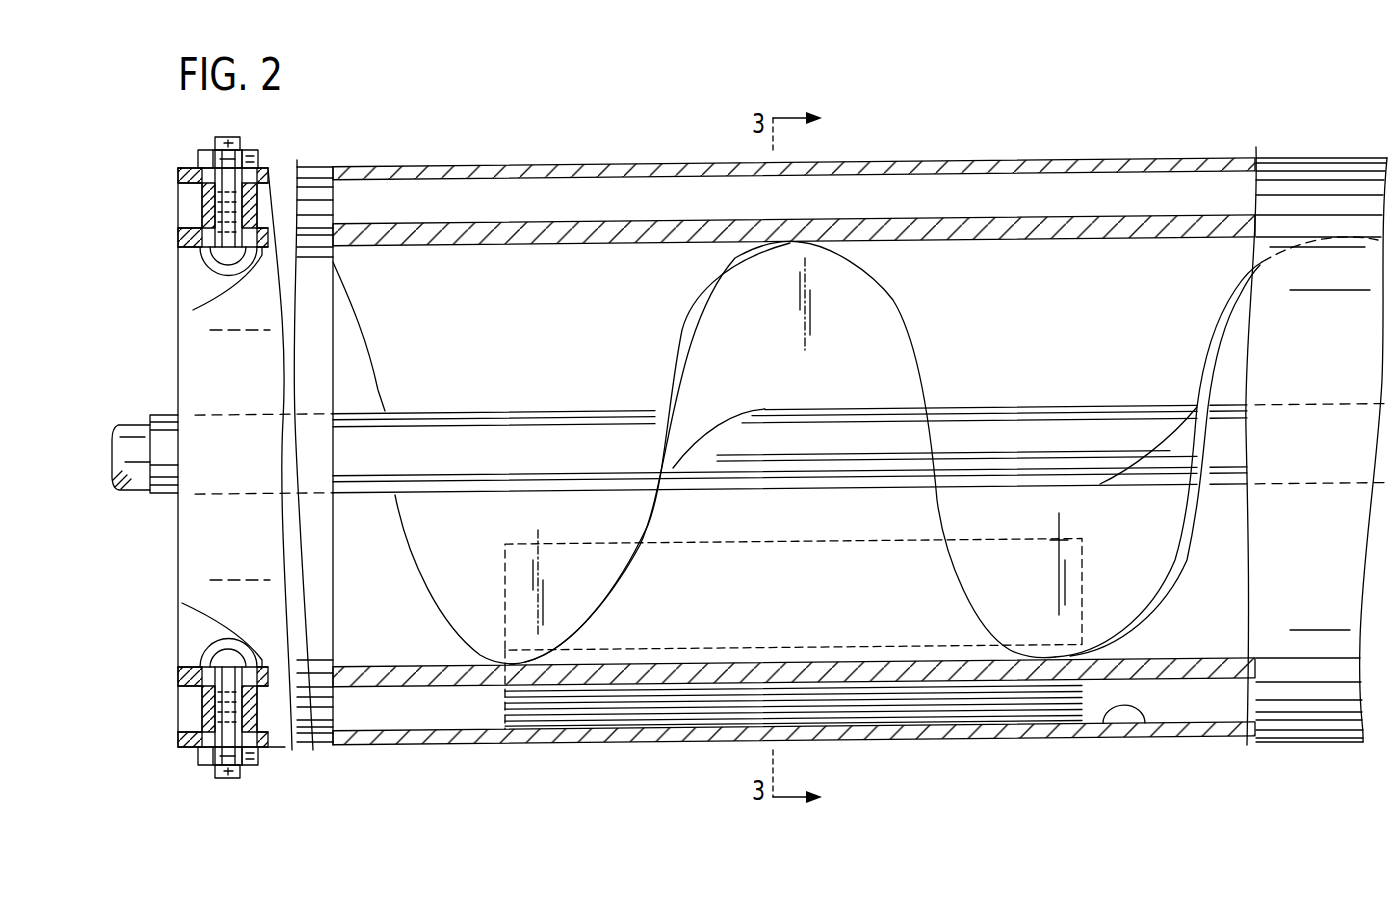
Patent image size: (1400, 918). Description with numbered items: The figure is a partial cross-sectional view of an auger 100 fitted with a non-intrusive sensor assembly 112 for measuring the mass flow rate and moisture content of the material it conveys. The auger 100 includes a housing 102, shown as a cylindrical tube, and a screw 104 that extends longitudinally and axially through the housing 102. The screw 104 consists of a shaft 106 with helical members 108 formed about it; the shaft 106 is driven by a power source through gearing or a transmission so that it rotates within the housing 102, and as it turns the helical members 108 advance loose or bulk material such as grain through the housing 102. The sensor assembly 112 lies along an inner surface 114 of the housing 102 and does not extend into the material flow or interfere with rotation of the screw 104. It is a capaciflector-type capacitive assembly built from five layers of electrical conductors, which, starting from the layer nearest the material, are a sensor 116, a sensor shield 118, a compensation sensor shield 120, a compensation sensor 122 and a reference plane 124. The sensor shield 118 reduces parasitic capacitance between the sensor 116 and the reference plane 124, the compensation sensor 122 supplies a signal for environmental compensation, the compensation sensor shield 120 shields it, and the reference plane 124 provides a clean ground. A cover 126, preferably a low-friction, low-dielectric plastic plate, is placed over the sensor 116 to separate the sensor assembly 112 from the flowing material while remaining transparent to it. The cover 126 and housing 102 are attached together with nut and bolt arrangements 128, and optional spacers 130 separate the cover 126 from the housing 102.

The auger 100 is at (1108, 104).
The housing 102 is at (1177, 738).
The screw 104 is at (938, 381).
The shaft 106 is at (1040, 405).
The helical members 108 is at (364, 351).
The sensor assembly 112 is at (714, 772).
The inner surface 114 is at (1145, 742).
The sensor 116 is at (540, 693).
The sensor shield 118 is at (555, 700).
The compensation sensor shield 120 is at (582, 707).
The compensation sensor 122 is at (605, 715).
The reference plane 124 is at (643, 722).
The cover 126 is at (940, 238).
The nut and bolt arrangements 128 is at (262, 160).
The spacers 130 is at (207, 198).